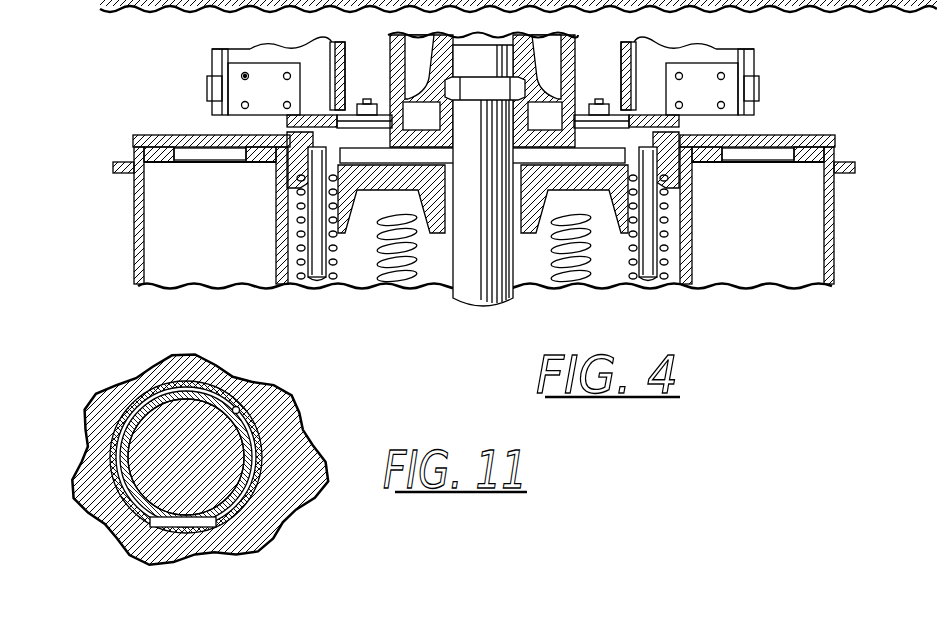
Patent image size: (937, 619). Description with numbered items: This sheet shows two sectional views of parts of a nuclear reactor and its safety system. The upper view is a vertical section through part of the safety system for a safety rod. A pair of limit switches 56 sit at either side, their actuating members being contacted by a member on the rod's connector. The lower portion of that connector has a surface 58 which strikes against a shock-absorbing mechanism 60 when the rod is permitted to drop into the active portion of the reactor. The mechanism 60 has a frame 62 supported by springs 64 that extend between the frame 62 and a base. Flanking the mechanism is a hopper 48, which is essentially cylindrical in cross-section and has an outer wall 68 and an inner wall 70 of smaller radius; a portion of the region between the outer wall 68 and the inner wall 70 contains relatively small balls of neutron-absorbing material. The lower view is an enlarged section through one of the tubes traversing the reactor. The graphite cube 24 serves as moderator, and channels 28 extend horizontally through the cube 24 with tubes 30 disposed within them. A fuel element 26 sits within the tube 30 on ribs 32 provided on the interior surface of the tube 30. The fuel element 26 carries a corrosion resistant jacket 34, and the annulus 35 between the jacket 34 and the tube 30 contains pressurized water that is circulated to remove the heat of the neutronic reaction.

In FIG. 11, the cube 24 is at (290, 500).
In FIG. 11, the fuel elements 26 is at (200, 420).
In FIG. 11, the channels 28 is at (240, 410).
In FIG. 11, the tubes 30 is at (133, 405).
In FIG. 11, the ribs 32 is at (150, 522).
In FIG. 11, the corrosion resistant jackets 34 is at (136, 473).
In FIG. 11, the annulus 35 is at (118, 437).
In FIG. 4, the hopper 48 is at (132, 228).
In FIG. 4, the limit switches 56 is at (252, 70).
In FIG. 4, the surface 58 is at (540, 145).
In FIG. 4, the shock-absorbing mechanism 60 is at (598, 192).
In FIG. 4, the frame 62 is at (528, 250).
In FIG. 4, the springs 64 is at (330, 282).
In FIG. 4, the outer wall 68 is at (830, 228).
In FIG. 4, the inner wall 70 is at (686, 236).